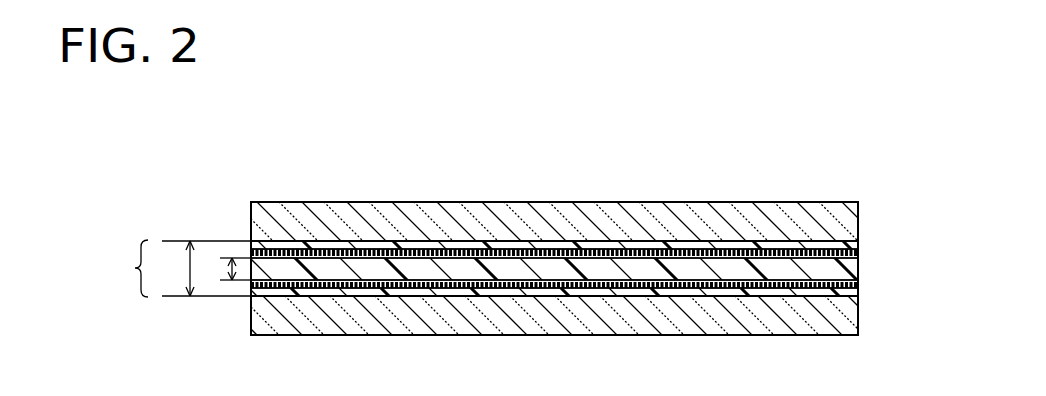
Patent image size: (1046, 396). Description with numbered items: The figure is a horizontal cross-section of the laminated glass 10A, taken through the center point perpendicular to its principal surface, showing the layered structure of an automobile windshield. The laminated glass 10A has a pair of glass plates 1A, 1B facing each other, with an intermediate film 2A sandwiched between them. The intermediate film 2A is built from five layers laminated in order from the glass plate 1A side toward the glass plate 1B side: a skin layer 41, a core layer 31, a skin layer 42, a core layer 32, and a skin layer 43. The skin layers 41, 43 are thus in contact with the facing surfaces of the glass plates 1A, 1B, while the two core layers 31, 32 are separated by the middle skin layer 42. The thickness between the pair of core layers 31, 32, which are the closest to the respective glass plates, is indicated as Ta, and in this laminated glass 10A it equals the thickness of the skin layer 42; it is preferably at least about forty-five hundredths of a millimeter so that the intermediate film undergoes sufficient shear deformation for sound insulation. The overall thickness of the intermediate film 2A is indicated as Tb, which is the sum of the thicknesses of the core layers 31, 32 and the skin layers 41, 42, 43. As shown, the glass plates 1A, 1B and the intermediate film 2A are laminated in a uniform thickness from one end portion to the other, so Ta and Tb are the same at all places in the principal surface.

The laminated glass 10A is at (638, 188).
The glass plate 1A is at (813, 328).
The glass plate 1B is at (843, 203).
The intermediate film 2A is at (118, 268).
The core layer 31 is at (860, 283).
The core layer 32 is at (860, 252).
The skin layer 41 is at (860, 293).
The skin layer 42 is at (860, 273).
The skin layer 43 is at (858, 243).
The thickness between the outermost core layers Ta is at (223, 270).
The thickness of the intermediate film Tb is at (203, 268).